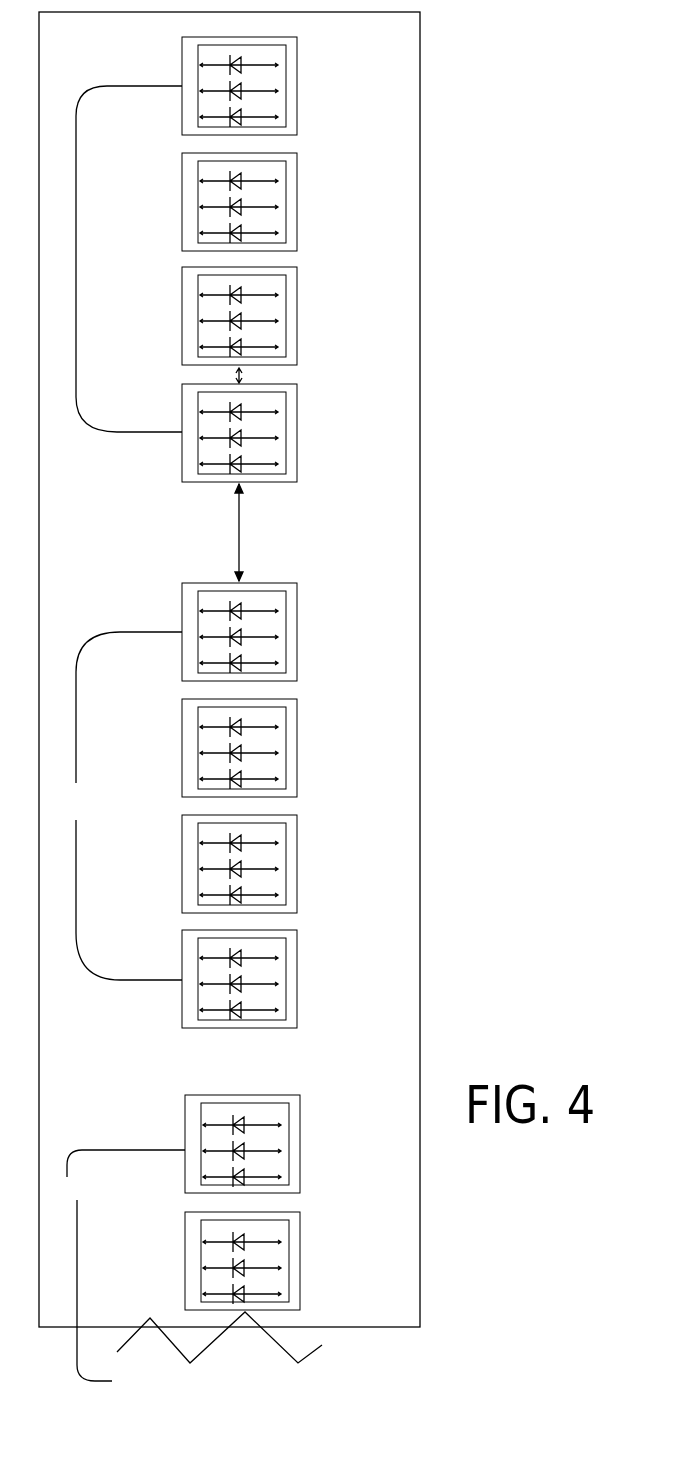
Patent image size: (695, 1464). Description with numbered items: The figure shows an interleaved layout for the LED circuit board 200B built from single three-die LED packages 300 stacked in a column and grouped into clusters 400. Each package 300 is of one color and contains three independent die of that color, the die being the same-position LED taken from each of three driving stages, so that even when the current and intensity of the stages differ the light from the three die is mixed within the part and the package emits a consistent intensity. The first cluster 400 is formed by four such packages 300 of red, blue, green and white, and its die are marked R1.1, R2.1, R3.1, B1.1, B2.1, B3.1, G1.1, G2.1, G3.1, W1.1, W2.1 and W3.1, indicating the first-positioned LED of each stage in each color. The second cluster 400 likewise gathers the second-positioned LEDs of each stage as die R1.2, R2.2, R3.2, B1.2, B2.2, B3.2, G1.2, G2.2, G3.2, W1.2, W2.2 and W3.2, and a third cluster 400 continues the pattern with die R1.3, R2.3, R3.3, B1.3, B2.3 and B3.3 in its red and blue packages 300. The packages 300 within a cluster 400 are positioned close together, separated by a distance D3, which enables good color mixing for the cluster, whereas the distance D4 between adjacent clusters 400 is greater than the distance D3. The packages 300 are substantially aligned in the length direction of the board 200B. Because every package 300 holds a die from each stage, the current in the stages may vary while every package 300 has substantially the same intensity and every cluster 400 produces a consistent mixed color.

The LED circuit board 200B is at (229, 669).
The single LED package 300 is at (295, 673).
The cluster 400 is at (116, 733).
The distance between adjacent packages D3 is at (222, 374).
The distance between adjacent clusters D4 is at (220, 532).
The red LED R1.1 is at (302, 60).
The red LED R2.1 is at (302, 86).
The red LED R3.1 is at (302, 112).
The blue LED B1.1 is at (302, 176).
The blue LED B2.1 is at (302, 202).
The blue LED B3.1 is at (302, 228).
The green LED G1.1 is at (302, 290).
The green LED G2.1 is at (302, 316).
The green LED G3.1 is at (302, 342).
The white LED W1.1 is at (302, 407).
The white LED W2.1 is at (302, 433).
The white LED W3.1 is at (302, 459).
The red LED R1.2 is at (302, 606).
The red LED R2.2 is at (302, 632).
The red LED R3.2 is at (302, 658).
The blue LED B1.2 is at (302, 722).
The blue LED B2.2 is at (302, 748).
The blue LED B3.2 is at (302, 774).
The green LED G1.2 is at (302, 838).
The green LED G2.2 is at (302, 864).
The green LED G3.2 is at (302, 890).
The white LED W1.2 is at (302, 953).
The white LED W2.2 is at (302, 979).
The white LED W3.2 is at (302, 1005).
The red LED R1.3 is at (305, 1120).
The red LED R2.3 is at (305, 1146).
The red LED R3.3 is at (305, 1172).
The blue LED B1.3 is at (305, 1237).
The blue LED B2.3 is at (305, 1263).
The blue LED B3.3 is at (305, 1289).